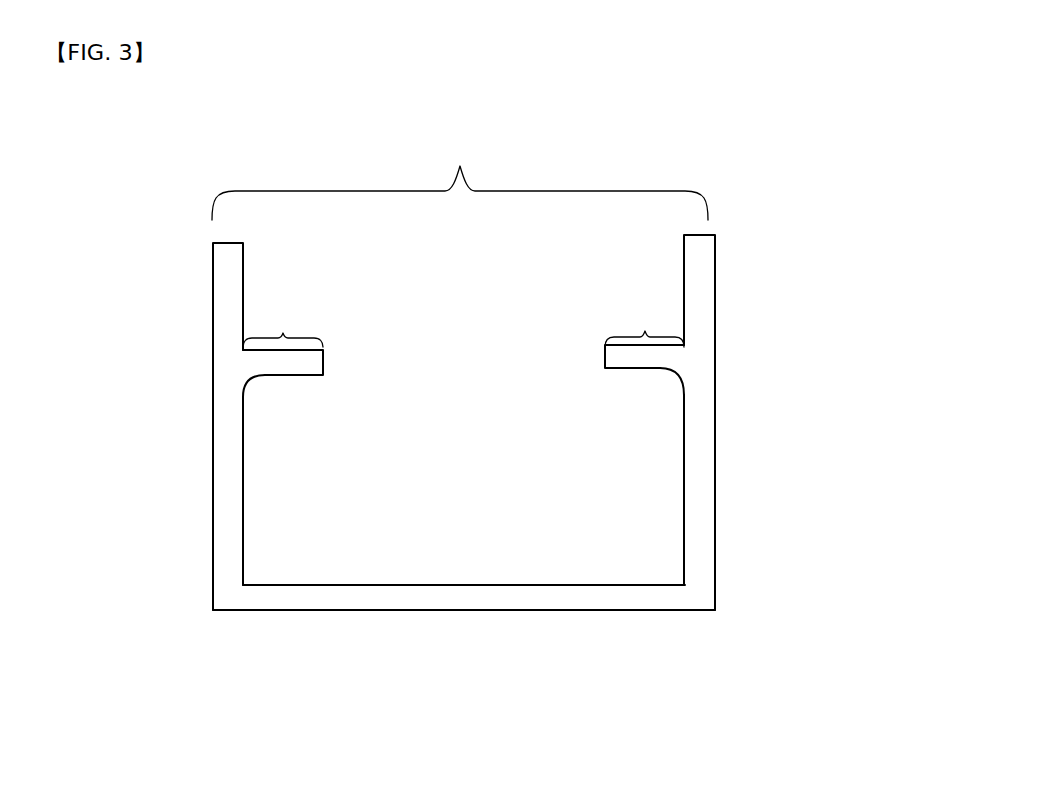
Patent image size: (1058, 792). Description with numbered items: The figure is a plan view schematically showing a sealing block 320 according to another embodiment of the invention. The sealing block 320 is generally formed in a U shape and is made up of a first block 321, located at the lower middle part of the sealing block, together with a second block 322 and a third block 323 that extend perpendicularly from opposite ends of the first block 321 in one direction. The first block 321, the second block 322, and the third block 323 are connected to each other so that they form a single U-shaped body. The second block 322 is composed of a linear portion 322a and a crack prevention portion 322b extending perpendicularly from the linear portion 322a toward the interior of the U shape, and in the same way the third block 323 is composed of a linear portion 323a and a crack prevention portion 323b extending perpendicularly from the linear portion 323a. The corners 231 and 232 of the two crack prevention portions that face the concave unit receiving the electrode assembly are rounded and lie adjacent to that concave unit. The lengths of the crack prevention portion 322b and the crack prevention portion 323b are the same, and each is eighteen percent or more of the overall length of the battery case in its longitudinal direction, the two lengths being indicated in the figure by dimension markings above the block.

The sealing block 320 is at (130, 213).
The first block 321 is at (483, 611).
The second block 322 is at (112, 265).
The linear portion 322a is at (213, 290).
The crack prevention portion 322b is at (270, 367).
The third block 323 is at (833, 252).
The linear portion 323a is at (714, 290).
The crack prevention portion 323b is at (650, 357).
The corner 231 is at (268, 393).
The corner 232 is at (662, 383).